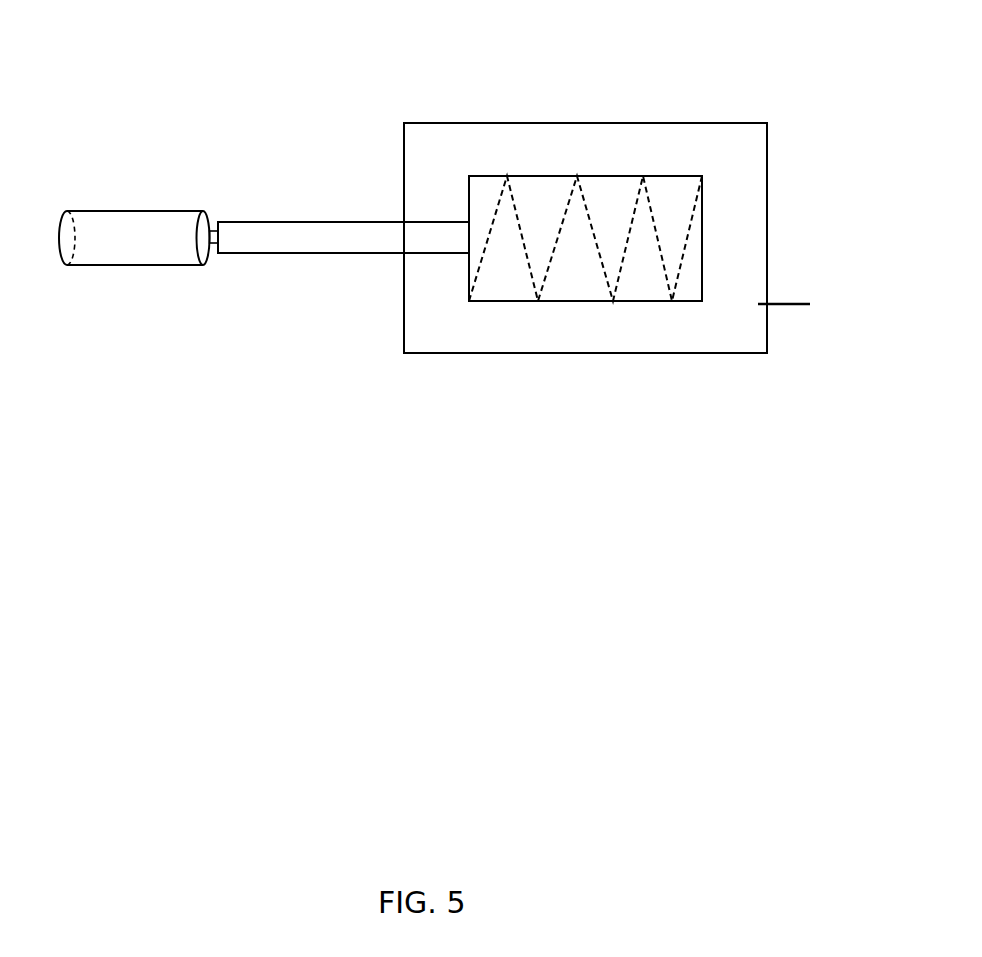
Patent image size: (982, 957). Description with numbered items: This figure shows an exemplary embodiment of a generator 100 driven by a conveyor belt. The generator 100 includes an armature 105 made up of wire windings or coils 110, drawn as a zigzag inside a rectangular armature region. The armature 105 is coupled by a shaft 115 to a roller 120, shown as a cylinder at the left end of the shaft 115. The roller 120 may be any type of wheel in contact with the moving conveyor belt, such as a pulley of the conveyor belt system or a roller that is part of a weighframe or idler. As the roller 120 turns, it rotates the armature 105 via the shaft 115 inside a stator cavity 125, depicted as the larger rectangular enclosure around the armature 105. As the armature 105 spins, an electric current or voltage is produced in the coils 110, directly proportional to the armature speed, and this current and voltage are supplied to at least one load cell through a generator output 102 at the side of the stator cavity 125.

The generator 100 is at (404, 50).
The generator output 102 is at (780, 357).
The armature 105 is at (614, 188).
The wire windings or coils 110 is at (687, 240).
The shaft 115 is at (343, 222).
The roller 120 is at (148, 211).
The stator cavity 125 is at (423, 313).